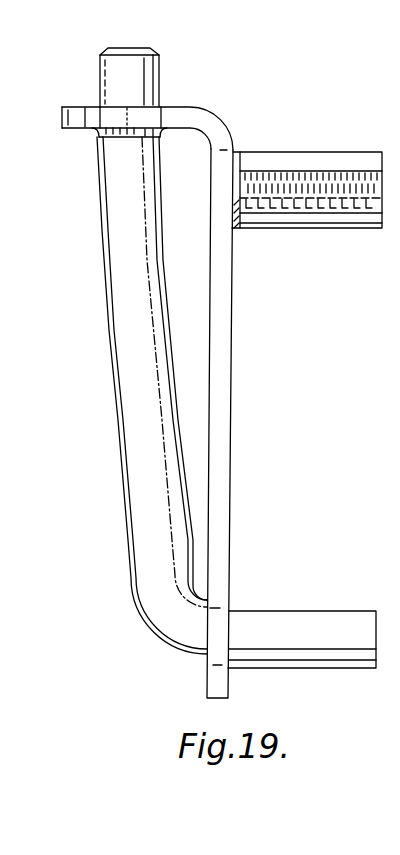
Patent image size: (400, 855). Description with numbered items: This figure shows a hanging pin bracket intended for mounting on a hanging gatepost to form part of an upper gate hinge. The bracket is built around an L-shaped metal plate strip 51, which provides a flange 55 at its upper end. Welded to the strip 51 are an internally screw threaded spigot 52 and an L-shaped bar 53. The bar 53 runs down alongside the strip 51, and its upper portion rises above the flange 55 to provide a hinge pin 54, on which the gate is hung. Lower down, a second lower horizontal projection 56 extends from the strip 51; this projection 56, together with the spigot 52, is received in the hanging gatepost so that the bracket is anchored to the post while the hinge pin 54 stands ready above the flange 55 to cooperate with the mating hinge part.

The L-shaped metal plate strip 51 is at (227, 407).
The internally screw threaded spigot 52 is at (350, 160).
The L-shaped bar 53 is at (130, 353).
The hinge pin 54 is at (150, 73).
The flange 55 is at (187, 108).
The second lower horizontal projection 56 is at (298, 623).